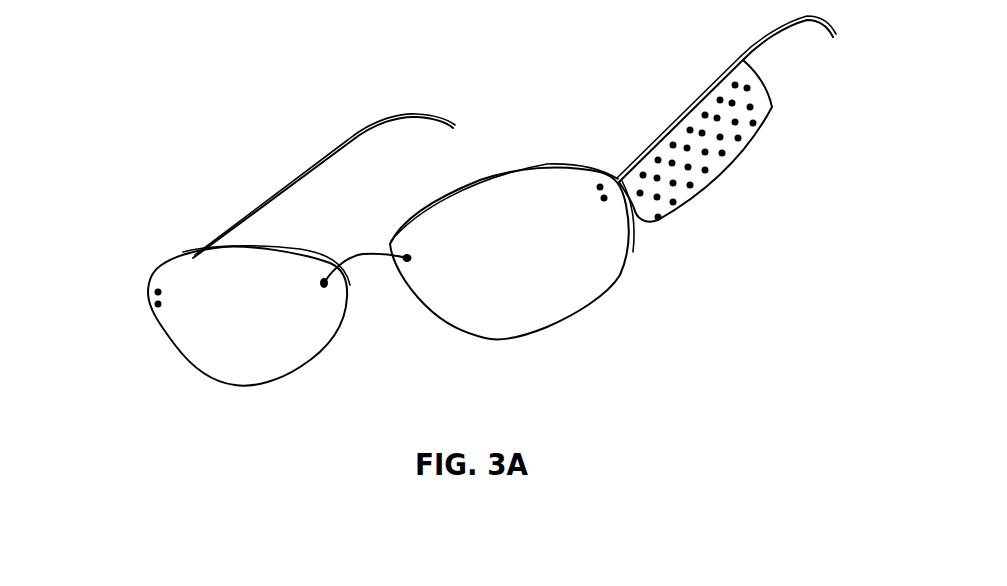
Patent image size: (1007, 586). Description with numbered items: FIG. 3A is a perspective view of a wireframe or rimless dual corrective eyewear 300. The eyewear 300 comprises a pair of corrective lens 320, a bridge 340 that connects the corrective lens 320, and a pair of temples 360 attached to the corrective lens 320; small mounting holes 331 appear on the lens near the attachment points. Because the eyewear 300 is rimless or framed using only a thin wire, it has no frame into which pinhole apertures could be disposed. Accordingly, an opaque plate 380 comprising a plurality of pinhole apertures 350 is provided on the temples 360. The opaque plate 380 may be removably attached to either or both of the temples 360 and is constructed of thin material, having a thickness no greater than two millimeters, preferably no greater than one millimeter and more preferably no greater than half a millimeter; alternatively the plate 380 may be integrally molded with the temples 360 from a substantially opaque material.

The dual corrective eyewear 300 is at (157, 60).
The corrective lens 320 is at (200, 353).
The apertures in lens 331 is at (158, 288).
The bridge 340 is at (360, 260).
The pinhole apertures 350 is at (720, 152).
The temples 360 is at (352, 142).
The opaque plate 380 is at (772, 108).